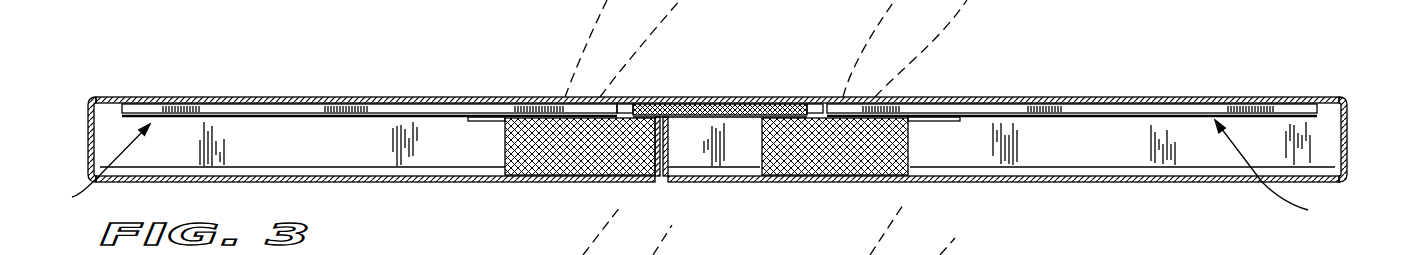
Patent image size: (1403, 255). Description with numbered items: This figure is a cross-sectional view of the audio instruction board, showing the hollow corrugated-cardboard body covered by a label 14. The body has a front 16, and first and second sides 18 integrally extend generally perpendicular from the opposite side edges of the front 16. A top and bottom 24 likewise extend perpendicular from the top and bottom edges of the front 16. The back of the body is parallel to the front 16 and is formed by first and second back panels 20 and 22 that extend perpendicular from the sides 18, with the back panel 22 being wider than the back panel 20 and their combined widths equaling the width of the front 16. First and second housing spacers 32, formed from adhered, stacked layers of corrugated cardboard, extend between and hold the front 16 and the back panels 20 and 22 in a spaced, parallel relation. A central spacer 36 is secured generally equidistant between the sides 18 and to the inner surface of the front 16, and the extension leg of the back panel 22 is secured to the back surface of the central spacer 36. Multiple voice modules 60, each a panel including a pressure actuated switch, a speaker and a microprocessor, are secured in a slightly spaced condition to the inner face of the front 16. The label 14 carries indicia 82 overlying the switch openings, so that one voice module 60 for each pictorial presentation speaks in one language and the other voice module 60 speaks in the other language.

The label 14 is at (1190, 97).
The front 16 is at (1032, 97).
The first and second sides 18 is at (83, 117).
The first back panel 20 is at (410, 182).
The second back panel 22 is at (1160, 182).
The top and bottom 24 is at (455, 142).
The housing spacers 32 is at (590, 150).
The central spacer 36 is at (732, 97).
The voice modules 60 is at (687, 173).
The indicia 82 is at (583, 92).